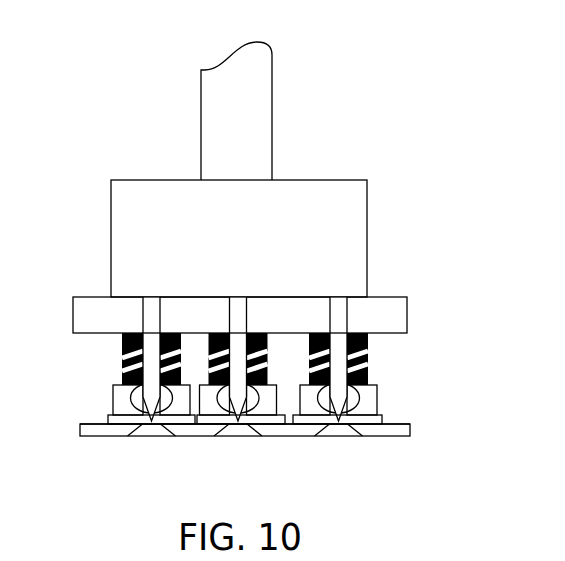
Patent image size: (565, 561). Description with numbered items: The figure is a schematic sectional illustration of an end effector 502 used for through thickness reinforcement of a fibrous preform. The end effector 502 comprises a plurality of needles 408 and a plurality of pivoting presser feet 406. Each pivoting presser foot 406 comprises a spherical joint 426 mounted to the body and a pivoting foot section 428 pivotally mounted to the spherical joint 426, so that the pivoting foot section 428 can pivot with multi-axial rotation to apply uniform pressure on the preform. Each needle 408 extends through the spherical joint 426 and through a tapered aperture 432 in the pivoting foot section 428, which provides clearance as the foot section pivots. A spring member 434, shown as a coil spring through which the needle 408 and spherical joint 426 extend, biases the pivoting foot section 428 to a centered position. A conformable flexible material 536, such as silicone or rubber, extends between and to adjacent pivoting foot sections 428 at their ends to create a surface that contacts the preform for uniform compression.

The end effector 502 is at (374, 92).
The needle 408 is at (150, 317).
The spring member 434 is at (353, 352).
The spherical joint 426 is at (378, 391).
The pivoting presser foot 406 is at (186, 420).
The aperture 432 is at (327, 419).
The pivoting foot section 428 is at (392, 422).
The flexible material 536 is at (103, 428).